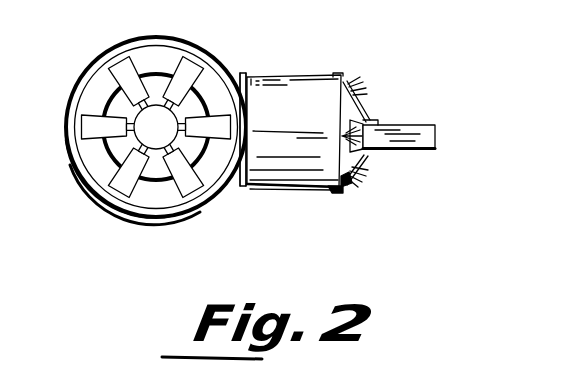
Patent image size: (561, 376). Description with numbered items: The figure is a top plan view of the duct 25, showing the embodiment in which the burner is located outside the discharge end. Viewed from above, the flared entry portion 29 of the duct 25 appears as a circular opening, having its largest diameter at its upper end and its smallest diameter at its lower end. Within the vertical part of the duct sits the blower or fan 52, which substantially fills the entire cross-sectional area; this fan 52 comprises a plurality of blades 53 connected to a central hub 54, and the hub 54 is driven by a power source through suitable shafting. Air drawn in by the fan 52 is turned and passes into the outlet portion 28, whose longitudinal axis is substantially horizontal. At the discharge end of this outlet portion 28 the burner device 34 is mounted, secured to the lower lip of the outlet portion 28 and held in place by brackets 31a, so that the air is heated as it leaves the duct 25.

The duct 25 is at (235, 64).
The outlet portion 28 is at (304, 76).
The flared entry portion 29 is at (198, 201).
The brackets 31a is at (366, 117).
The burner device 34 is at (403, 124).
The blower or fan 52 is at (94, 141).
The blades 53 is at (139, 72).
The hub 54 is at (168, 135).